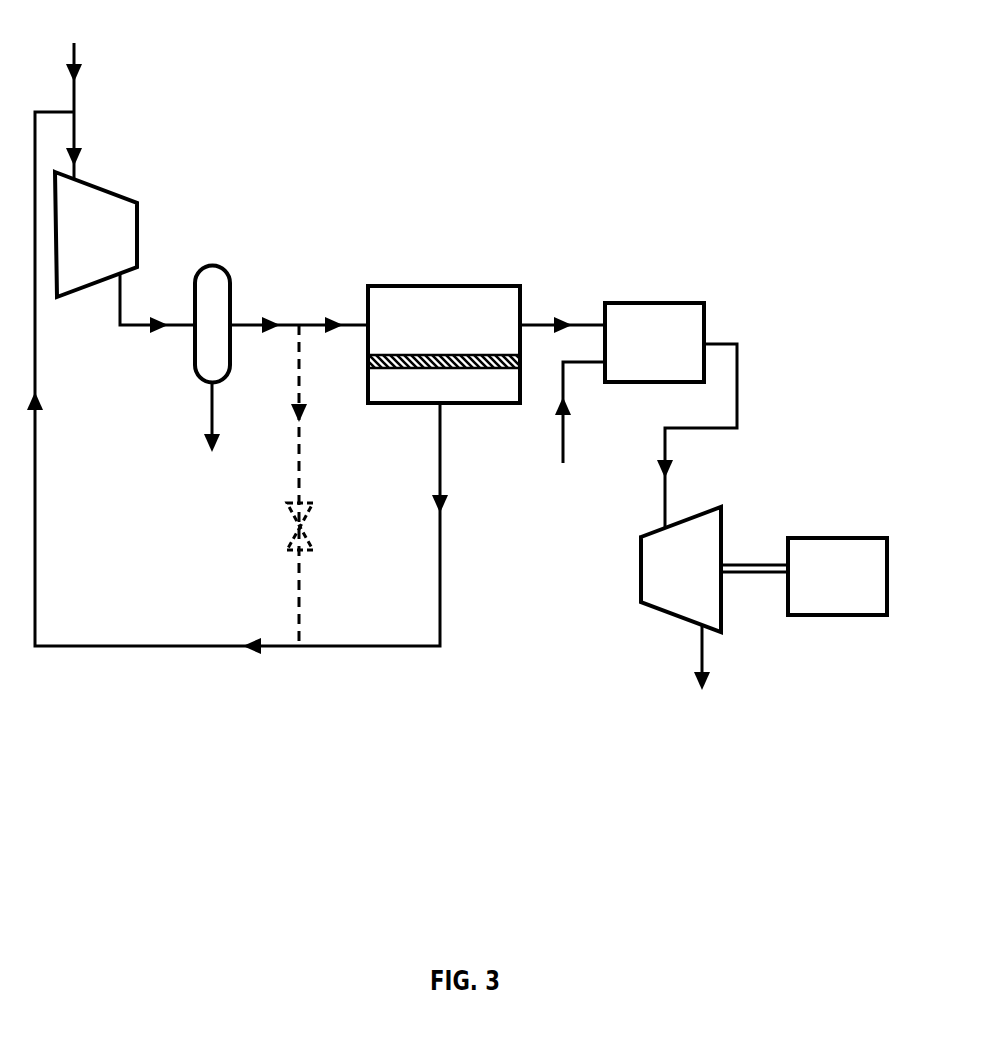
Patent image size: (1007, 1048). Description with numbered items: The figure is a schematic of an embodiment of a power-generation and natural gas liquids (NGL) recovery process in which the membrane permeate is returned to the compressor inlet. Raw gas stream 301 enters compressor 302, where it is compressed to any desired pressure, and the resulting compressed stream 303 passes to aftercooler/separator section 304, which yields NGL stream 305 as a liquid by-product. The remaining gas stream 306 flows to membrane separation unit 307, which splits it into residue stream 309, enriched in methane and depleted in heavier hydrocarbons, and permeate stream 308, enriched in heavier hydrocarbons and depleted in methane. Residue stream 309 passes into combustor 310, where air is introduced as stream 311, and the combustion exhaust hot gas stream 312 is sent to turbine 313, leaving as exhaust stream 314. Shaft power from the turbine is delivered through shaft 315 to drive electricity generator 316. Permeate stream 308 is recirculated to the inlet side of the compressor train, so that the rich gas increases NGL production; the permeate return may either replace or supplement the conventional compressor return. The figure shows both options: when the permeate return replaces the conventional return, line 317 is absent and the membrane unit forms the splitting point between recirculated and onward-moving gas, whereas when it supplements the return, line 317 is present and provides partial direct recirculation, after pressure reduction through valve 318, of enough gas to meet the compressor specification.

The raw gas stream 301 is at (73, 100).
The compressor 302 is at (122, 192).
The compressed stream 303 is at (157, 303).
The aftercooler/separator section 304 is at (212, 265).
The NGL stream 305 is at (210, 433).
The gas stream 306 is at (299, 312).
The membrane separation unit 307 is at (473, 285).
The permeate stream 308 is at (237, 397).
The residue stream 309 is at (562, 311).
The combustor 310 is at (673, 302).
The air stream 311 is at (574, 431).
The combustion exhaust hot gas stream 312 is at (697, 436).
The turbine 313 is at (657, 608).
The exhaust stream 314 is at (704, 676).
The shaft 315 is at (753, 573).
The electricity generator 316 is at (835, 537).
The line 317 is at (320, 485).
The valve 318 is at (324, 526).